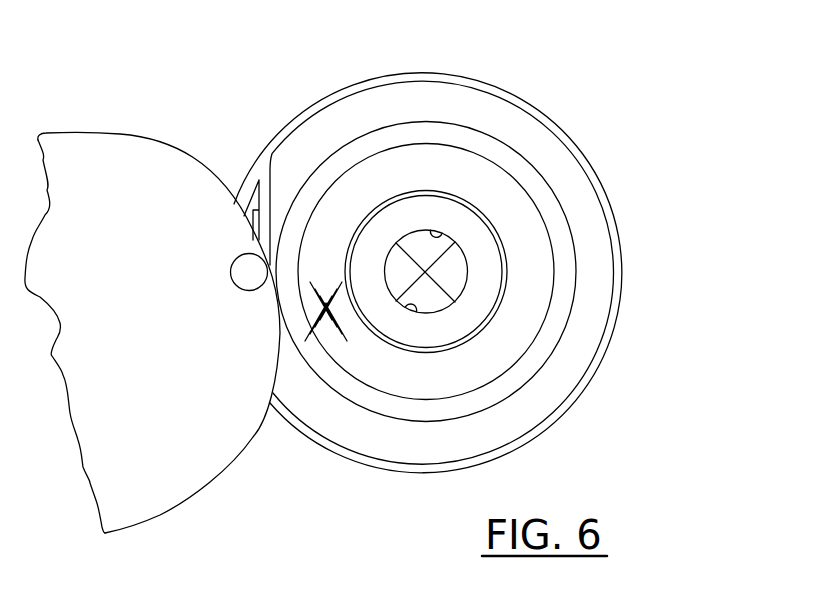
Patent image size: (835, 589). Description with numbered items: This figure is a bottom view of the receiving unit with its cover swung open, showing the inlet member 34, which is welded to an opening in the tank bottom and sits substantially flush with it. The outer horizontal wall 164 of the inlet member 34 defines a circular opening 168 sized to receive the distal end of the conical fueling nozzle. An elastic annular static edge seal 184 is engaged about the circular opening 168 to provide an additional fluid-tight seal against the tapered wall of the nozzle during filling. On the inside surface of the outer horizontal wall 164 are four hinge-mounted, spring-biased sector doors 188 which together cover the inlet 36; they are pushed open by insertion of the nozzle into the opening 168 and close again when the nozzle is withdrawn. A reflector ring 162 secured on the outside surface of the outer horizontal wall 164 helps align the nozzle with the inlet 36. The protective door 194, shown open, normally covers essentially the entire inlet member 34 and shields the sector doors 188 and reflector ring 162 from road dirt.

The inlet member 34 is at (650, 208).
The inlet 36 is at (443, 233).
The reflector ring 162 is at (522, 295).
The outer horizontal wall 164 is at (542, 195).
The circular opening 168 is at (415, 313).
The edge seal 184 is at (472, 310).
The sector doors 188 is at (398, 270).
The protective door 194 is at (125, 212).